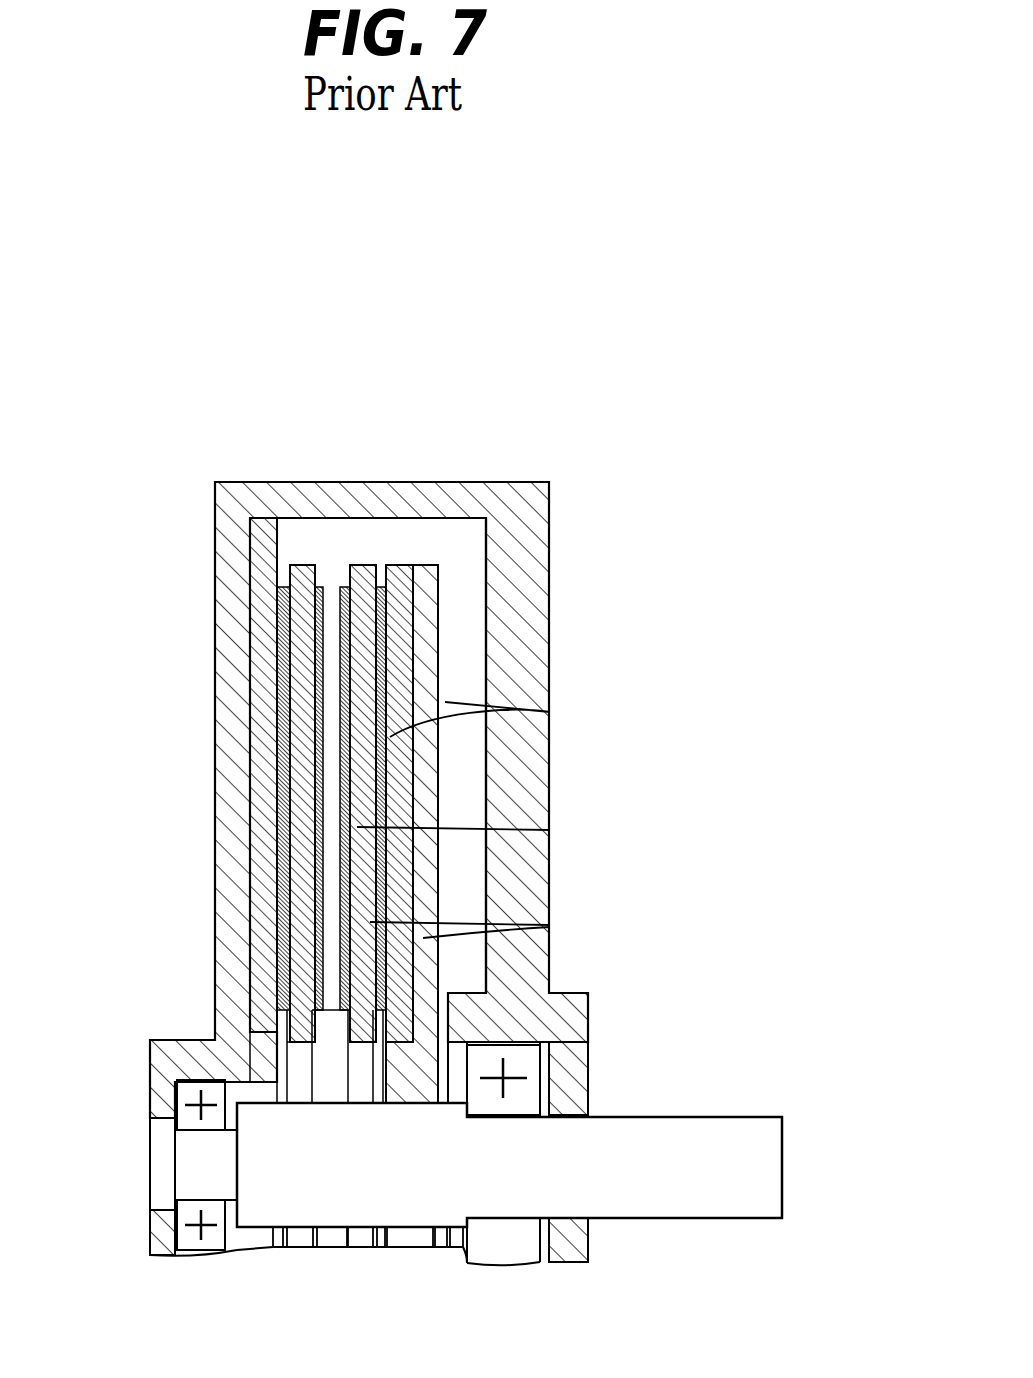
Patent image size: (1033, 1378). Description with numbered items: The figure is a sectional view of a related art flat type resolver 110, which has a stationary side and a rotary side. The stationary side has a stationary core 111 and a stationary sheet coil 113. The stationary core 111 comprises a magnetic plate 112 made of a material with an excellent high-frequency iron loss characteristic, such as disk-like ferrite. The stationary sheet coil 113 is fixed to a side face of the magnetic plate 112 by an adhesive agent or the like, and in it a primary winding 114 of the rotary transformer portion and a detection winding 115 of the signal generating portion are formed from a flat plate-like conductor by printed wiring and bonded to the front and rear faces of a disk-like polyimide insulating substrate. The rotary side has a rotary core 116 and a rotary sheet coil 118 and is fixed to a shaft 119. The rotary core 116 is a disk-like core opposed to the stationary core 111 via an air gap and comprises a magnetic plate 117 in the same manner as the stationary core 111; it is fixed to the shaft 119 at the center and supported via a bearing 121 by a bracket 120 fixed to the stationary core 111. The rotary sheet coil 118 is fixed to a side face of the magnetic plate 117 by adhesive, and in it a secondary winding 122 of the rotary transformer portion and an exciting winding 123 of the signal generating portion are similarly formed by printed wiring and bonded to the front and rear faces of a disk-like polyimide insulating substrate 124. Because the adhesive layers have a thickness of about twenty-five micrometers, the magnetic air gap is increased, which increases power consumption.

The flat type resolver 110 is at (762, 438).
The stationary core 111 is at (217, 538).
The magnetic plate 112 is at (232, 482).
The stationary sheet coil 113 is at (305, 565).
The primary winding 114 is at (213, 910).
The detection winding 115 is at (265, 650).
The rotary core 116 is at (440, 593).
The magnetic plate 117 is at (407, 565).
The rotary sheet coil 118 is at (363, 565).
The shaft 119 is at (723, 1117).
The bracket 120 is at (508, 482).
The bearing 121 is at (168, 1040).
The secondary winding 122 is at (550, 925).
The exciting winding 123 is at (550, 712).
The insulating substrate 124 is at (550, 832).